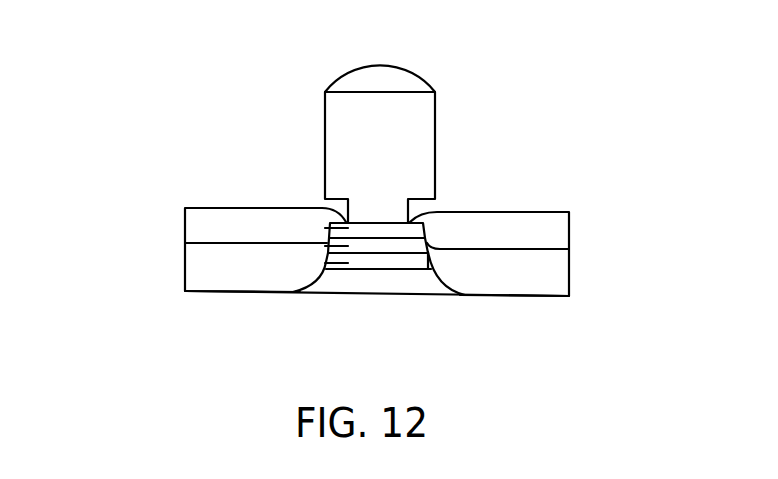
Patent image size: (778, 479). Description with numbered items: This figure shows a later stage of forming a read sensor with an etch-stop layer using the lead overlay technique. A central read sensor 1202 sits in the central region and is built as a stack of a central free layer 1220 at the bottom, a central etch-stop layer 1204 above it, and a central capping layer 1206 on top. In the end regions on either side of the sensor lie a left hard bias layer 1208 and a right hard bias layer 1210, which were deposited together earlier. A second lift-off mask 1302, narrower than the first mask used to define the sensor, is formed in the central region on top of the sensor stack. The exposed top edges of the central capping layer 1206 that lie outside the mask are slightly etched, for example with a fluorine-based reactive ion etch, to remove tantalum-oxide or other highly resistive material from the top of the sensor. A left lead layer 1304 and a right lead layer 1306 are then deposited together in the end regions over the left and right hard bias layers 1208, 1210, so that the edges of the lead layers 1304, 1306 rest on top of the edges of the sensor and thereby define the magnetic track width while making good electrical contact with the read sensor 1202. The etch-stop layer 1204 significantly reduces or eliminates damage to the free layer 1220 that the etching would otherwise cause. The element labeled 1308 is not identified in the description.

The central read sensor 1202 is at (437, 326).
The central etch-stop layer 1204 is at (330, 246).
The central capping layer 1206 is at (338, 229).
The left hard bias layer 1208 is at (208, 278).
The right hard bias layer 1210 is at (545, 278).
The central free layer 1220 is at (328, 263).
The second lift-off mask 1302 is at (420, 120).
The left lead layer 1304 is at (185, 232).
The right lead layer 1306 is at (545, 230).
The gate cap 1308 is at (390, 82).